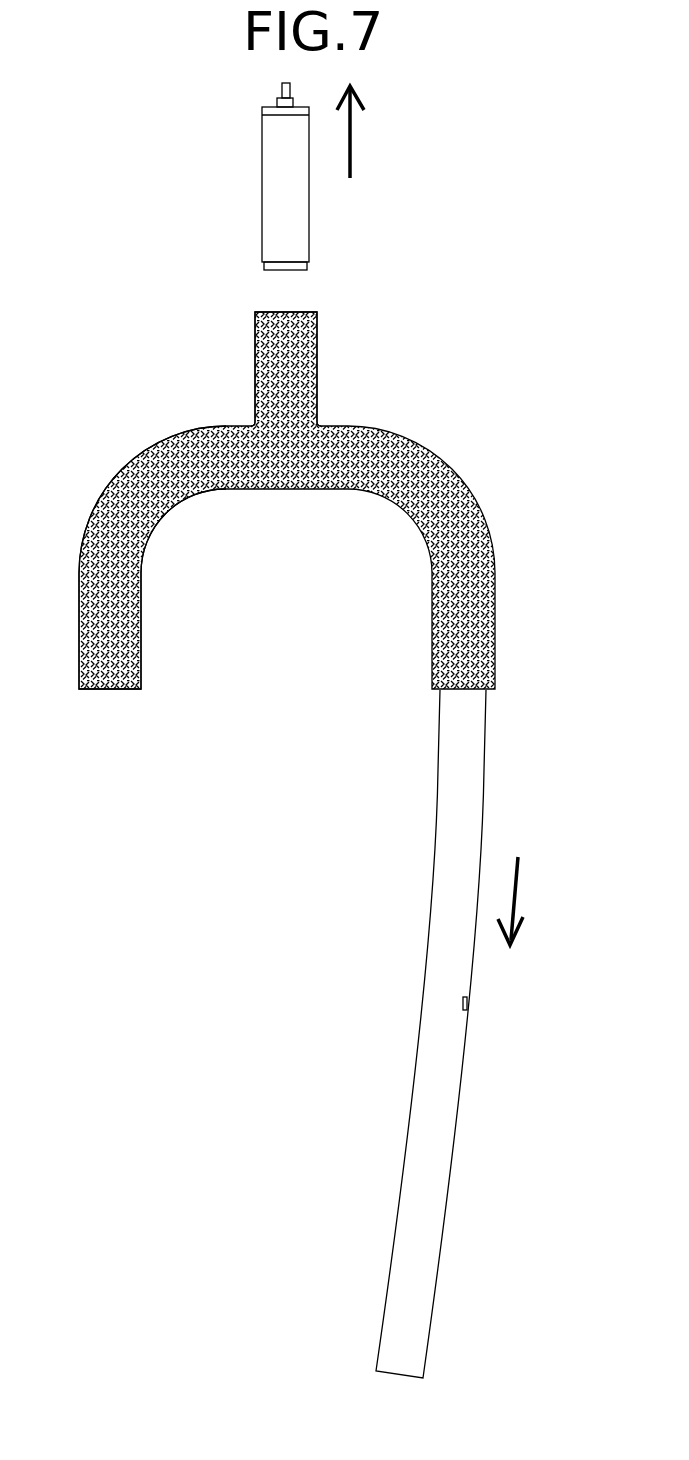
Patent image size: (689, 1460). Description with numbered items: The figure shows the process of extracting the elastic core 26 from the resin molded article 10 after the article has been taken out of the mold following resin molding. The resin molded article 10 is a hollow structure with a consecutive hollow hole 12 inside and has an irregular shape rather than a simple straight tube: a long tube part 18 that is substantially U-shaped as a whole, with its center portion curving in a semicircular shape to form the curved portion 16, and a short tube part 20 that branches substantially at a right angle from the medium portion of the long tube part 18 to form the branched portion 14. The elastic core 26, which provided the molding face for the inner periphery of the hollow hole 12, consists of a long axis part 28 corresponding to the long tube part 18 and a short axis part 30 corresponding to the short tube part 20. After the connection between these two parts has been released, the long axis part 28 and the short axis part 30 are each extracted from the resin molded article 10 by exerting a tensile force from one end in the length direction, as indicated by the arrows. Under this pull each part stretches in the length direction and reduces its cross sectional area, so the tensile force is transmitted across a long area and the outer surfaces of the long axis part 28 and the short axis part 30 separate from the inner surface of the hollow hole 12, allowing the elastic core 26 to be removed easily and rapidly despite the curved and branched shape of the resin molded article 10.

The resin molded article 10 is at (281, 500).
The hollow hole 12 is at (440, 480).
The branched portion 14 is at (250, 419).
The curved portion 16 is at (101, 472).
The long tube part 18 is at (132, 628).
The short tube part 20 is at (303, 382).
The elastic core 26 is at (434, 730).
The long axis part 28 is at (472, 795).
The short axis part 30 is at (290, 212).